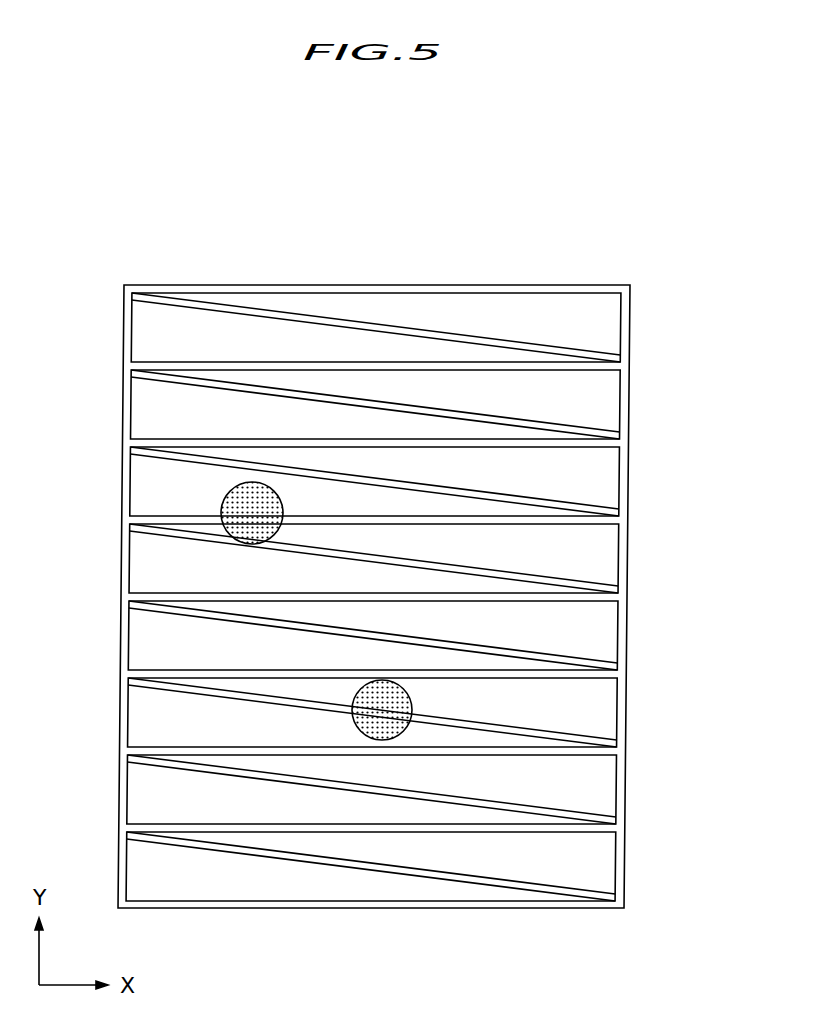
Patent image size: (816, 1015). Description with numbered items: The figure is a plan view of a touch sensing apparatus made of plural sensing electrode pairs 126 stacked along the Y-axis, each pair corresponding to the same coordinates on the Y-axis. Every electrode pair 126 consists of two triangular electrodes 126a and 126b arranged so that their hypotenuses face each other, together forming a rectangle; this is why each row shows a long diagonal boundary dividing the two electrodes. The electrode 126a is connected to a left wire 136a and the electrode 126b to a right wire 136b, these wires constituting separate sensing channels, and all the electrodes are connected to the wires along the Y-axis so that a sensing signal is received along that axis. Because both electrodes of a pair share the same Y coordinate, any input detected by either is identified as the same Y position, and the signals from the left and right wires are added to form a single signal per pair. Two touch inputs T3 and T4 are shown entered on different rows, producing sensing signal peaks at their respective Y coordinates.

The sensing electrode pair 126 is at (440, 213).
The triangular electrode 126a is at (265, 335).
The triangular electrode 126b is at (415, 303).
The left wire 136a is at (87, 312).
The right wire 136b is at (663, 308).
The touch input T3 is at (227, 495).
The touch input T4 is at (412, 700).